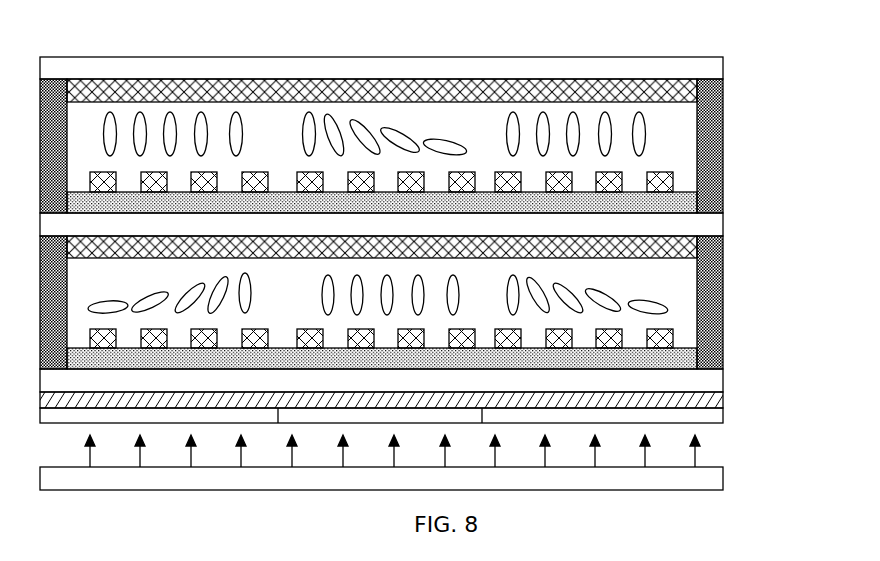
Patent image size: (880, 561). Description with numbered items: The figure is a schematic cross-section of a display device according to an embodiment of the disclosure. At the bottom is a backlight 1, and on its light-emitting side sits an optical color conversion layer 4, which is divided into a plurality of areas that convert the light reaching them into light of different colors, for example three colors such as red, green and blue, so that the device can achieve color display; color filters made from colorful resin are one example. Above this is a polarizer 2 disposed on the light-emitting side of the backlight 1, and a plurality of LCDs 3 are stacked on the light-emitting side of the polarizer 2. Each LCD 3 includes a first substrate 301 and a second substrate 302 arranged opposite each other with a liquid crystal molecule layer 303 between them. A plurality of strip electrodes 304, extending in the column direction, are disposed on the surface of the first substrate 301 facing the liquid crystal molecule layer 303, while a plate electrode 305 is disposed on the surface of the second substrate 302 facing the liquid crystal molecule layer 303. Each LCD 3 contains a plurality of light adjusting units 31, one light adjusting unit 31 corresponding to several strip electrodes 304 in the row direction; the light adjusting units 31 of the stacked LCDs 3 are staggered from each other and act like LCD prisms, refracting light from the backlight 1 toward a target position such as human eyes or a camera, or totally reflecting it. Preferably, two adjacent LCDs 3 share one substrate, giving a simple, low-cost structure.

The backlight 1 is at (700, 478).
The polarizer 2 is at (700, 383).
The LCD 3 is at (798, 225).
The optical color conversion layer 4 is at (700, 415).
The light adjusting unit 31 is at (214, 282).
The first substrate 301 is at (700, 360).
The second substrate 302 is at (692, 227).
The liquid crystal molecule layer 303 is at (640, 307).
The strip electrode 304 is at (670, 340).
The plate electrode 305 is at (667, 248).